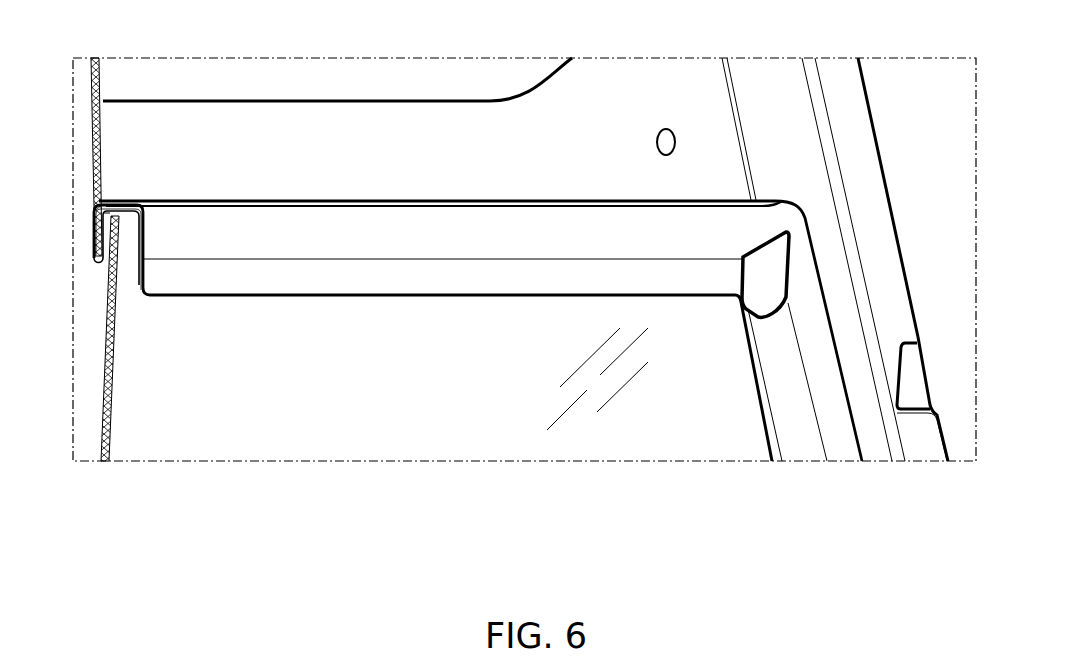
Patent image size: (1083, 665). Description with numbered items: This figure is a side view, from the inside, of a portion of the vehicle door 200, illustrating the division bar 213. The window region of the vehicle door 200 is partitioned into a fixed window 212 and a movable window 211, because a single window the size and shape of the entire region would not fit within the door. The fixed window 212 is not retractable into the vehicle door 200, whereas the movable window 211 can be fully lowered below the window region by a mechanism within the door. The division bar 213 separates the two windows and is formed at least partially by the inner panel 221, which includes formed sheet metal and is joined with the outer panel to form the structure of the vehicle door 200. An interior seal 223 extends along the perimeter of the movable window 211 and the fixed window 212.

The vehicle door 200 is at (579, 34).
The movable window 211 is at (383, 373).
The fixed window 212 is at (314, 91).
The division bar 213 is at (630, 250).
The inner panel 221 is at (788, 168).
The interior seal 223 is at (717, 277).